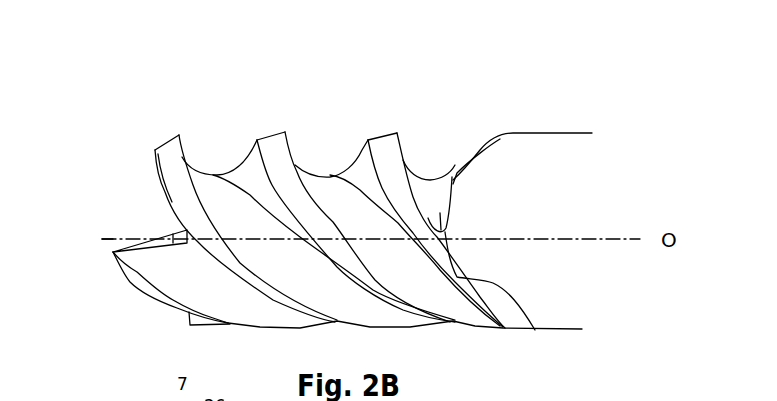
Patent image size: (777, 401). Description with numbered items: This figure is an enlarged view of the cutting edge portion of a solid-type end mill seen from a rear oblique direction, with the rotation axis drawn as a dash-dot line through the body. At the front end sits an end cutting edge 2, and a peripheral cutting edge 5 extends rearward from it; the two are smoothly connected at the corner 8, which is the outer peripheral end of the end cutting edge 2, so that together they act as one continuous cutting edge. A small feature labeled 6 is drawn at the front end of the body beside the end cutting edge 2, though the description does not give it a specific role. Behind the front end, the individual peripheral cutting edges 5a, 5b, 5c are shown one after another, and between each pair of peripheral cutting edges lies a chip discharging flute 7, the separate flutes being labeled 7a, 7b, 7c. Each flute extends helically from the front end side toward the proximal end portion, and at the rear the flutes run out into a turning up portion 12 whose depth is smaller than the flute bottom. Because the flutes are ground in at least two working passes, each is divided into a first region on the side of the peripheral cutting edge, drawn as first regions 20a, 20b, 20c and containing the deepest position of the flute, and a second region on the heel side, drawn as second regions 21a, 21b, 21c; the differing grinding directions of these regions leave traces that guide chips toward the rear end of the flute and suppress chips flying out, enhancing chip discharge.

The end cutting edge 2 is at (125, 241).
The peripheral cutting edge 5 is at (150, 287).
The hub portion for blade 7a 5a is at (243, 258).
The hub portion for blade 7b 5b is at (347, 247).
The hub portion for blade 7c 5c is at (417, 200).
The hub nose portion 6 is at (173, 235).
The chip discharging flute 7 is at (140, 257).
The first blade 7a is at (291, 187).
The second blade 7b is at (378, 174).
The third blade 7c is at (456, 184).
The corner 8 is at (113, 251).
The turning up portion 12 is at (535, 330).
The front blade portion of blade 7a 20a is at (215, 192).
The rear blade portion of blade 7a 21a is at (250, 158).
The front blade portion of blade 7b 20b is at (325, 183).
The rear blade portion of blade 7b 21b is at (358, 157).
The front blade portion of blade 7c 20c is at (428, 177).
The rear blade portion of blade 7c 21c is at (410, 103).